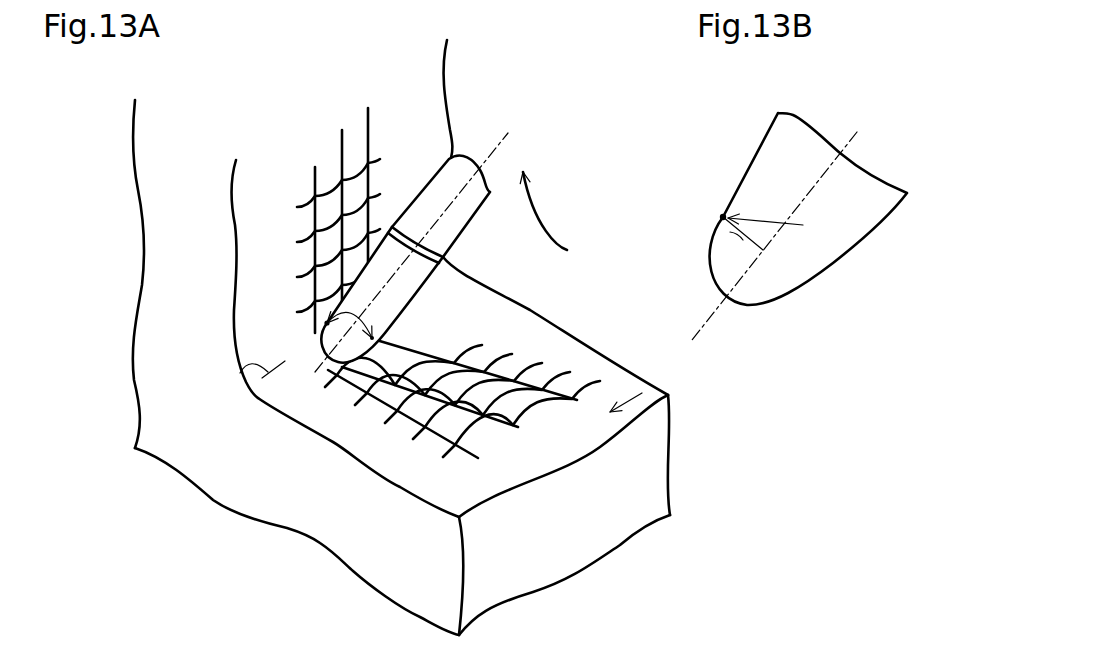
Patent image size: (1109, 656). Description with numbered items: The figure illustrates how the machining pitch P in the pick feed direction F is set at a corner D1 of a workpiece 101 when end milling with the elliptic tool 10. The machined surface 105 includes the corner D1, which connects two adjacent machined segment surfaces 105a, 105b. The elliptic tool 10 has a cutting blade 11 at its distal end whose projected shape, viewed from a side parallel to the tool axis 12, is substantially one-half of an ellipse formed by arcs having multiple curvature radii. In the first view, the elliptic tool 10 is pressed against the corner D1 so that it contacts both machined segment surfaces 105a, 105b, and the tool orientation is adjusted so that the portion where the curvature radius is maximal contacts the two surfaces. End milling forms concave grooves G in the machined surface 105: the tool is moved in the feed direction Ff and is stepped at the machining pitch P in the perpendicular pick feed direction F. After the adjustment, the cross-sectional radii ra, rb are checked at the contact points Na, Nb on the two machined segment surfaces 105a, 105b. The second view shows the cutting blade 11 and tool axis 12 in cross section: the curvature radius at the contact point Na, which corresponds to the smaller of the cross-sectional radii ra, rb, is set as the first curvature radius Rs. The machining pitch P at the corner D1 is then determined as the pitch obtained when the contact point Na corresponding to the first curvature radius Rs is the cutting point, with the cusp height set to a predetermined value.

In FIG. 13A, the workpiece 101 is at (163, 178).
In FIG. 13A, the machined surface 105 is at (272, 208).
In FIG. 13A, the machined segment surface 105a is at (260, 255).
In FIG. 13A, the machined segment surface 105b is at (293, 403).
In FIG. 13A, the corner D1 is at (240, 373).
In FIG. 13A, the concave grooves G is at (320, 177).
In FIG. 13A, the machining pitch P is at (397, 108).
In FIG. 13A, the elliptic tool 10 is at (389, 230).
In FIG. 13B, the cutting blade 11 is at (747, 168).
In FIG. 13A, the tool axis 12 is at (498, 144).
In FIG. 13B, the tool axis 12 is at (712, 313).
In FIG. 13A, the feed direction Ff is at (538, 194).
In FIG. 13A, the pick feed direction F is at (617, 412).
In FIG. 13A, the contact point Na is at (320, 321).
In FIG. 13B, the contact point Na is at (721, 217).
In FIG. 13A, the contact point Nb is at (378, 336).
In FIG. 13A, the cross-sectional radius ra is at (332, 342).
In FIG. 13B, the cross-sectional radius ra is at (745, 243).
In FIG. 13A, the cross-sectional radius rb is at (365, 316).
In FIG. 13B, the first curvature radius Rs is at (765, 210).